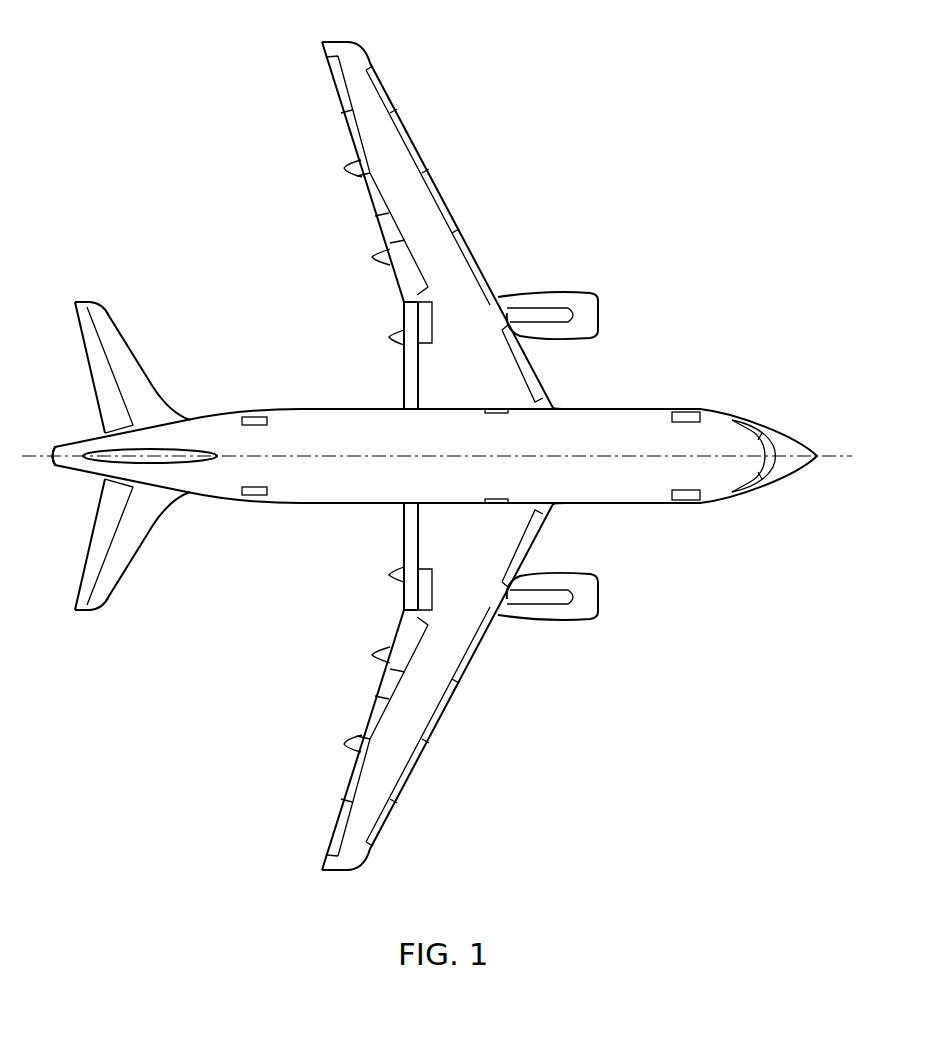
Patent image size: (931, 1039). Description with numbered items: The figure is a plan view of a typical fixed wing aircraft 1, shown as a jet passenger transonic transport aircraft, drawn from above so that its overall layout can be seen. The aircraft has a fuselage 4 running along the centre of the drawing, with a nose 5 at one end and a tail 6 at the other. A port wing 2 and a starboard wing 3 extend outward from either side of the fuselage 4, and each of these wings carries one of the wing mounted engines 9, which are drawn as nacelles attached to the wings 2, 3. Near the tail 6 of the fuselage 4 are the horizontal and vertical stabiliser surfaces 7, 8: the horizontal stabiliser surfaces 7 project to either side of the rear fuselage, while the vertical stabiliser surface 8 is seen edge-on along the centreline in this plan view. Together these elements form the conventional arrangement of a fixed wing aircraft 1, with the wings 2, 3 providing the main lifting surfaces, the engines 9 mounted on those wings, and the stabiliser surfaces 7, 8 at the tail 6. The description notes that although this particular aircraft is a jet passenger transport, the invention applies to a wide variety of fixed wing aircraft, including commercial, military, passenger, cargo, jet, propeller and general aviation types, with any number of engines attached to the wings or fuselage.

The fixed wing aircraft 1 is at (240, 752).
The port wing 2 is at (368, 98).
The starboard wing 3 is at (373, 800).
The fuselage 4 is at (328, 408).
The nose 5 is at (818, 457).
The tail 6 is at (53, 467).
The horizontal stabiliser surfaces 7 is at (122, 357).
The vertical stabiliser surface 8 is at (177, 450).
The wing mounted engines 9 is at (580, 302).